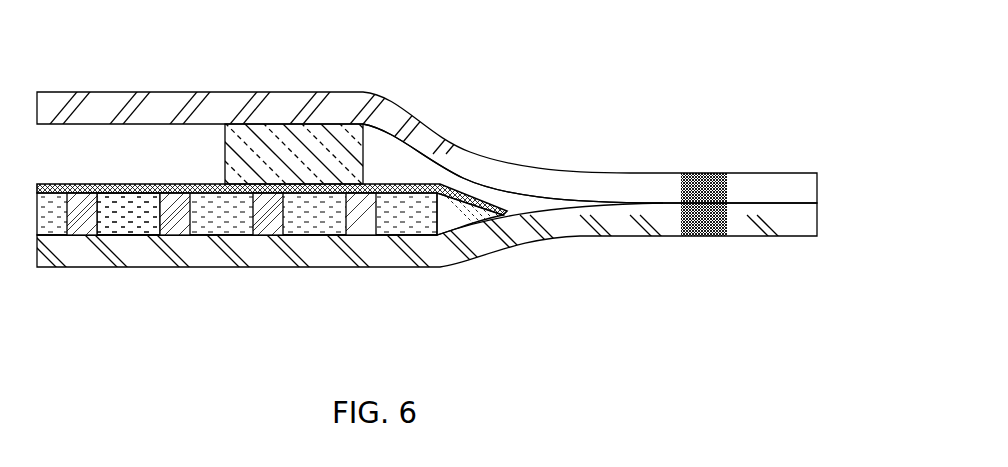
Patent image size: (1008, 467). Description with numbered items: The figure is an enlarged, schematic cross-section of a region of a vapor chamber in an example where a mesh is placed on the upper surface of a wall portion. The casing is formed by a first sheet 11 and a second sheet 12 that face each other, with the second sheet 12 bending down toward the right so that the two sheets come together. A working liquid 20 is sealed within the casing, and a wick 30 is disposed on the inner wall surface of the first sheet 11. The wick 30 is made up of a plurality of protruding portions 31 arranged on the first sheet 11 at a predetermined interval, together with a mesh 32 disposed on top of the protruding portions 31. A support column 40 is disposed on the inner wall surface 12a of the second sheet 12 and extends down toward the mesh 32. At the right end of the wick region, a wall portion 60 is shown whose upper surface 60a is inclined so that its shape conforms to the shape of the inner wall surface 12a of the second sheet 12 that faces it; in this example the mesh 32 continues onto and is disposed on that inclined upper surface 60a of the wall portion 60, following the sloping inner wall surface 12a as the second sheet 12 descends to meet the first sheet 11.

The first sheet 11 is at (807, 220).
The second sheet 12 is at (807, 187).
The inner wall surface of the second sheet 12a is at (465, 178).
The working liquid 20 is at (390, 223).
The wick 30 is at (163, 345).
The protruding portions 31 is at (177, 195).
The mesh 32 is at (118, 195).
The support column 40 is at (287, 127).
The wall portion 60 is at (463, 215).
The upper surface of the wall portion 60a is at (475, 207).